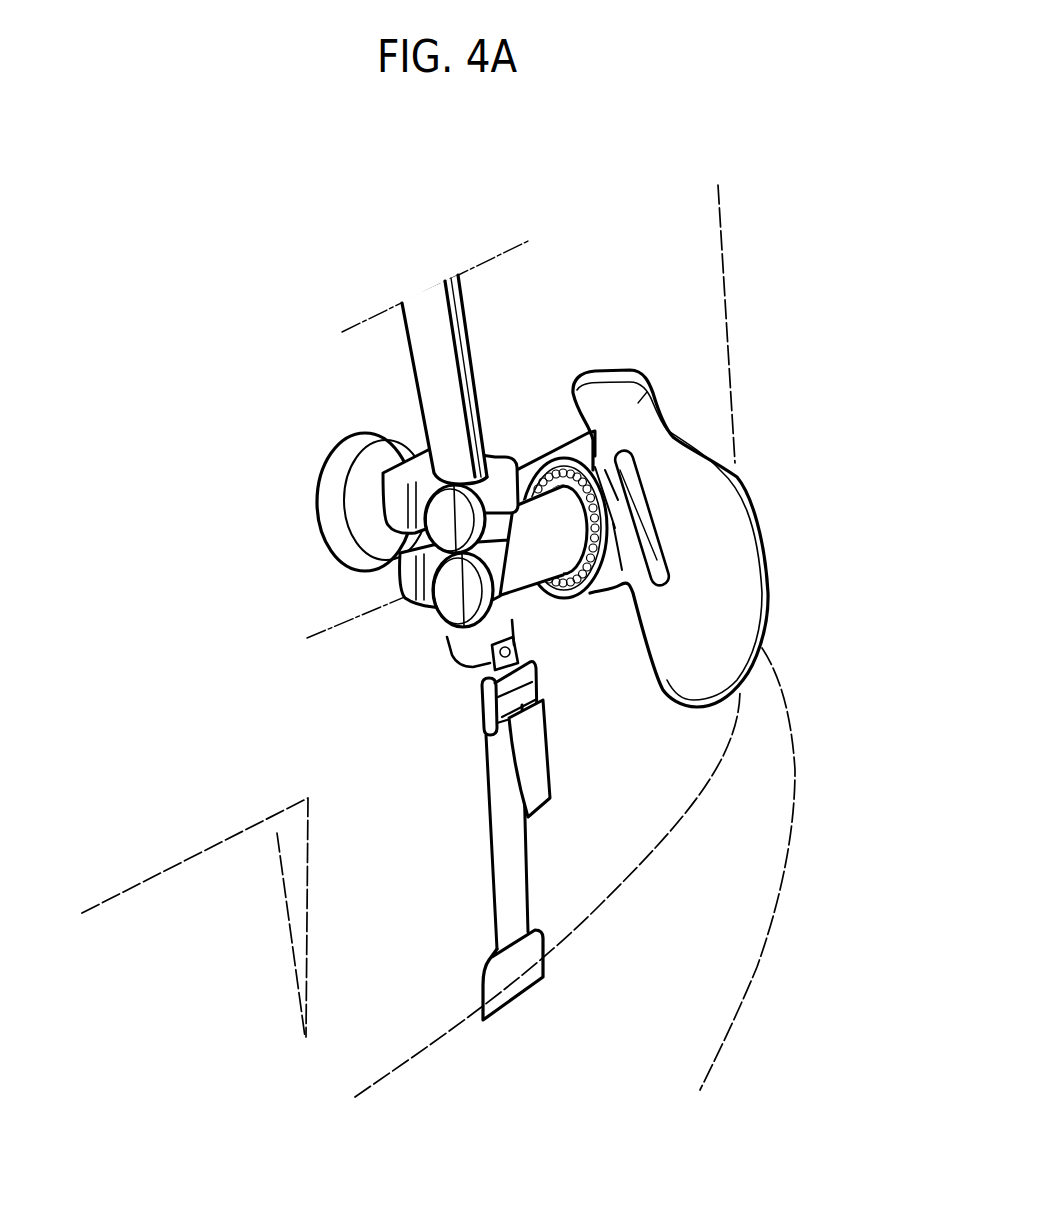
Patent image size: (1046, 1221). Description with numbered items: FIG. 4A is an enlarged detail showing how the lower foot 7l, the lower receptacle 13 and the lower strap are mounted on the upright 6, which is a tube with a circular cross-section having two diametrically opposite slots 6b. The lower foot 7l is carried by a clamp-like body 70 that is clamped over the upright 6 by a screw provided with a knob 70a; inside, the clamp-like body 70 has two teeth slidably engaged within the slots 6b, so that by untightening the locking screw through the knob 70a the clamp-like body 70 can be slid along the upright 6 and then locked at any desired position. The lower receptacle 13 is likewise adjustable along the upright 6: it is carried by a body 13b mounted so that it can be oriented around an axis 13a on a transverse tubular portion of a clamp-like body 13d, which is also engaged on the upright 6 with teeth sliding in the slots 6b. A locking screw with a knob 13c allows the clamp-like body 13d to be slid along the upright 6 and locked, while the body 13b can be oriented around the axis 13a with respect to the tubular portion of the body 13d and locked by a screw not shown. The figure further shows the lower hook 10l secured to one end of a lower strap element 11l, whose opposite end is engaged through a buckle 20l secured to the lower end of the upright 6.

The upright 6 is at (418, 374).
The slots 6b is at (457, 330).
The lower foot 7l is at (322, 497).
The clamp-like body 70 is at (498, 467).
The knob 70a is at (440, 528).
The lower receptacle 13 is at (647, 392).
The axis 13a is at (326, 640).
The body 13b is at (567, 447).
The knob 13c is at (447, 612).
The clamp-like body 13d is at (532, 572).
The buckle 20l is at (517, 692).
The lower strap element 11l is at (500, 857).
The lower hook 10l is at (527, 993).